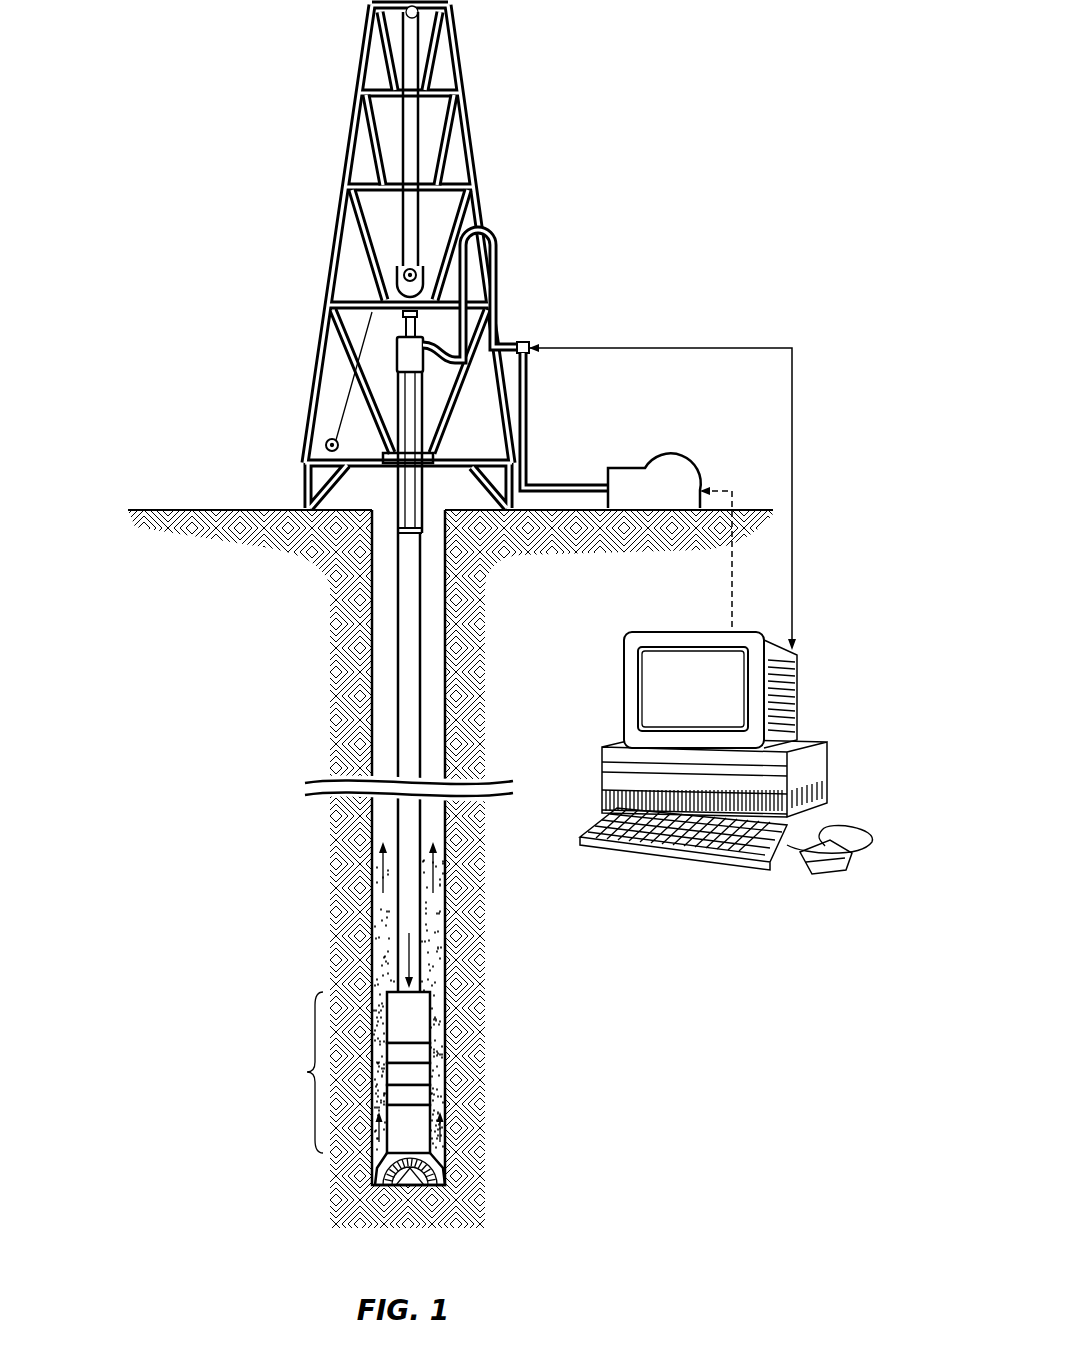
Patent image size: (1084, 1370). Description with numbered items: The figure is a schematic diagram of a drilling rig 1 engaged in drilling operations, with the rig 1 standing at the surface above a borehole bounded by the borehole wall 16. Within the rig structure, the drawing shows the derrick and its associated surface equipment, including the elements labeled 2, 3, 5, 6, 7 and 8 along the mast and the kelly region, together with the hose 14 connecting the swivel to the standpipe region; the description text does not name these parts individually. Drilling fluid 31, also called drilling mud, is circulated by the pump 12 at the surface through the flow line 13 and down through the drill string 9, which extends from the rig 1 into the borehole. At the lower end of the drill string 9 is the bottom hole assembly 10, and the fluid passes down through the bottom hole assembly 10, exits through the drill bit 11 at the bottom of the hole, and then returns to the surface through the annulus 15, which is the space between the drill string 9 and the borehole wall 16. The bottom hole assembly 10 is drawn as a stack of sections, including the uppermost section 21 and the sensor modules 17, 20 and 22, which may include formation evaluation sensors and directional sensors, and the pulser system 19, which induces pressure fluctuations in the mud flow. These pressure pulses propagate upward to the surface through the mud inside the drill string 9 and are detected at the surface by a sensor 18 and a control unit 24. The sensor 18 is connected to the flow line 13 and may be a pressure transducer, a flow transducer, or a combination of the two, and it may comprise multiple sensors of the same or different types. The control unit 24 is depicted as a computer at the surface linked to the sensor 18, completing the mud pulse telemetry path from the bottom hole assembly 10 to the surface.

The drilling rig 1 is at (350, 160).
The hook load sensor 2 is at (328, 447).
The derrick mast 3 is at (345, 292).
The traveling block and hook 5 is at (403, 272).
The kelly 6 is at (408, 318).
The swivel 7 is at (400, 352).
The rotary table 8 is at (400, 512).
The drill string 9 is at (398, 655).
The bottom hole assembly 10 is at (296, 1072).
The drill bit 11 is at (380, 1170).
The pump 12 is at (678, 473).
The flow line 13 is at (530, 465).
The rotary hose 14 is at (465, 348).
The annulus 15 is at (435, 712).
The borehole wall 16 is at (450, 635).
The sensor module 17 is at (432, 1067).
The sensor 18 is at (536, 354).
The pulser system 19 is at (432, 1045).
The sensor module 20 is at (432, 1090).
The drill collar 21 is at (432, 1018).
The sensor module 22 is at (432, 1132).
The control unit 24 is at (804, 605).
The drilling fluid 31 is at (383, 930).